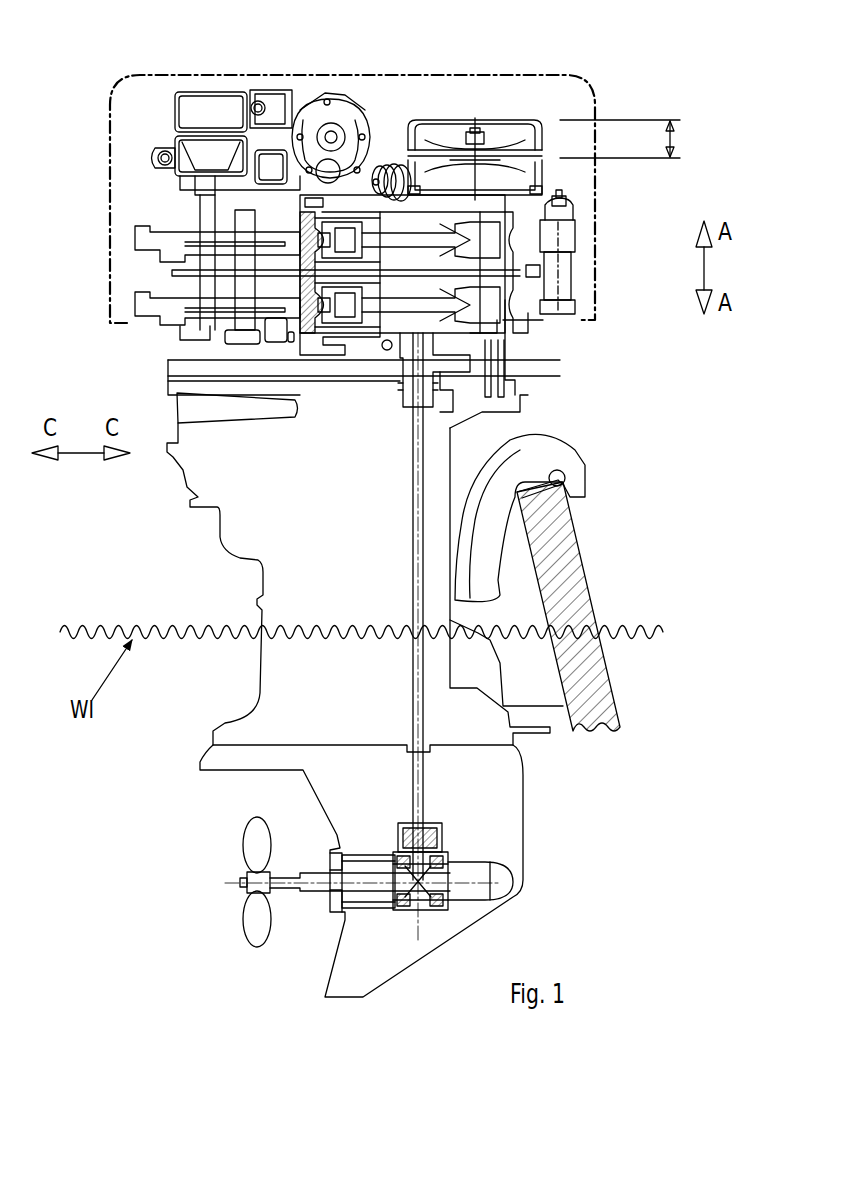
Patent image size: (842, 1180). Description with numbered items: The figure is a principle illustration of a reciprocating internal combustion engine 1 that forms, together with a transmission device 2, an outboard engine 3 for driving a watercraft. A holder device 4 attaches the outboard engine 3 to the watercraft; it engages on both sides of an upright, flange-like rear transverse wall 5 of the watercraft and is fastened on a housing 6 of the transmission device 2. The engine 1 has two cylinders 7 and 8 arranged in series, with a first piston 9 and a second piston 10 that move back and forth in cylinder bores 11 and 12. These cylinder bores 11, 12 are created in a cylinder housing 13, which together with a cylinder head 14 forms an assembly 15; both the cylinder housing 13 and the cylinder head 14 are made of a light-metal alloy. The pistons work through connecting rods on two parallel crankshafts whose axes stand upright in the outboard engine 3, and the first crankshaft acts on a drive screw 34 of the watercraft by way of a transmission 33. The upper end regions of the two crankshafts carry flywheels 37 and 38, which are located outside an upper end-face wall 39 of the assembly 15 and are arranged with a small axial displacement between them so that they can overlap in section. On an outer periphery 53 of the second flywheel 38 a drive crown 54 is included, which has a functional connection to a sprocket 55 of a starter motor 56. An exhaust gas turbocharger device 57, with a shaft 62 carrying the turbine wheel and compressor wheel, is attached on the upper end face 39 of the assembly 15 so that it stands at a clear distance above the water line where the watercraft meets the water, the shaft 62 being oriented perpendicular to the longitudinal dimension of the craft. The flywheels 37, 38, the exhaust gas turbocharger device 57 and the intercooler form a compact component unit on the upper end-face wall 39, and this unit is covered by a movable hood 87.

The reciprocating internal combustion engine 1 is at (586, 305).
The transmission device 2 is at (208, 556).
The outboard engine 3 is at (562, 66).
The holder device 4 is at (557, 712).
The rear transverse wall 5 is at (590, 574).
The housing 6 is at (180, 468).
The cylinder 7 is at (349, 344).
The cylinder 8 is at (372, 196).
The first piston 9 is at (307, 322).
The second piston 10 is at (348, 196).
The cylinder bore 11 is at (380, 320).
The cylinder bore 12 is at (370, 222).
The cylinder housing 13 is at (327, 350).
The cylinder head 14 is at (232, 364).
The assembly 15 is at (165, 338).
The transmission 33 is at (448, 362).
The drive screw 34 is at (247, 950).
The flywheel 37 is at (546, 130).
The flywheel 38 is at (546, 168).
The upper end-face wall 39 is at (384, 168).
The outer periphery 53 is at (545, 186).
The drive crown 54 is at (568, 200).
The sprocket 55 is at (566, 214).
The starter motor 56 is at (578, 282).
The exhaust gas turbocharger device 57 is at (352, 96).
The shaft 62 is at (322, 126).
The movable hood 87 is at (118, 78).